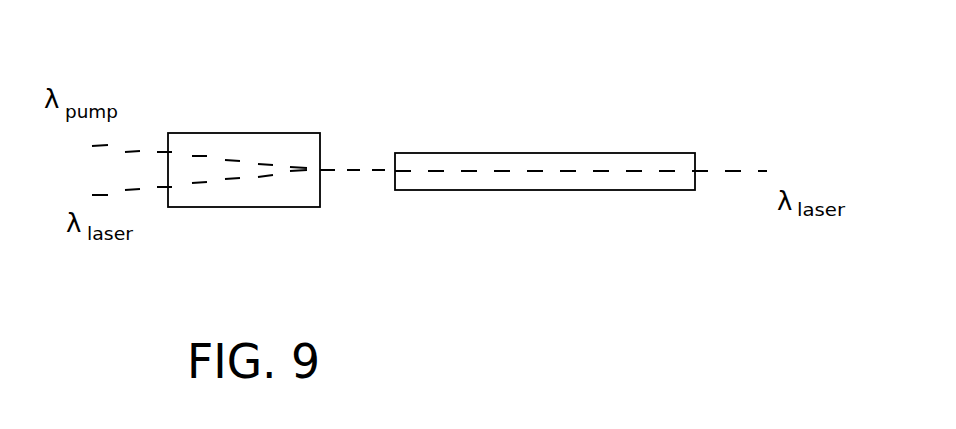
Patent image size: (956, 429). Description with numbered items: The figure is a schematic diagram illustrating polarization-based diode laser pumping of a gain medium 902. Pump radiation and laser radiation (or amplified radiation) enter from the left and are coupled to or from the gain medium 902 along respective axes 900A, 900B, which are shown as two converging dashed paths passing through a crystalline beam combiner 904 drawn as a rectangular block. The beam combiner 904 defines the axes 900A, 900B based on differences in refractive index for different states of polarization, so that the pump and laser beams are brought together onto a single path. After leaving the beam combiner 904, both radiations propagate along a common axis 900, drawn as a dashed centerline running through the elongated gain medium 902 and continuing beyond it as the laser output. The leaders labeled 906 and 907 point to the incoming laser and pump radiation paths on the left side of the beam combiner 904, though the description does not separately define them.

The axis 900 is at (370, 162).
The axis 900A is at (258, 140).
The axis 900B is at (242, 192).
The gain medium 902 is at (547, 153).
The crystalline beam combiner 904 is at (245, 133).
The laser beam leader 906 is at (130, 190).
The pump beam leader 907 is at (145, 140).